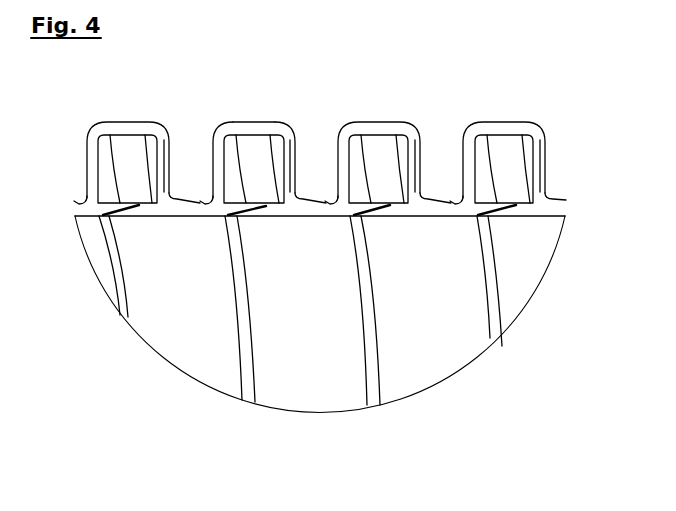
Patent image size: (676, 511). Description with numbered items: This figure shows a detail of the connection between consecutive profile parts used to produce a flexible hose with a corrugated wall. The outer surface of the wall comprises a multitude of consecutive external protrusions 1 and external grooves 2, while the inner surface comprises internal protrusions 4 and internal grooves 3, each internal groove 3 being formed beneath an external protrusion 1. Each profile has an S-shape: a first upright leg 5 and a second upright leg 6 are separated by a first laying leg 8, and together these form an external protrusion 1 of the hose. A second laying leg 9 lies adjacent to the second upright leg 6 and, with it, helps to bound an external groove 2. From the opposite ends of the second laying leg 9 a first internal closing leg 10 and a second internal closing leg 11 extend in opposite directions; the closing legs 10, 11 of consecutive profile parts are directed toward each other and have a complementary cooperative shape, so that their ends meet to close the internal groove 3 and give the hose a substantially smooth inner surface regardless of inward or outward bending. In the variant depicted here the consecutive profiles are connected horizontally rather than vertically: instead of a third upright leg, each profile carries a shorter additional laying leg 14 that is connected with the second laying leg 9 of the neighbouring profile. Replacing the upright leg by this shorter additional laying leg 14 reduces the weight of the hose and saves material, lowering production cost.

The external protrusion 1 is at (258, 117).
The external groove 2 is at (188, 165).
The internal groove 3 is at (263, 178).
The internal protrusion 4 is at (179, 225).
The first upright leg 5 is at (288, 162).
The second upright leg 6 is at (216, 159).
The first laying leg 8 is at (248, 124).
The second laying leg 9 is at (187, 210).
The first internal closing leg 10 is at (147, 210).
The second internal closing leg 11 is at (235, 213).
The additional laying leg 14 is at (304, 200).